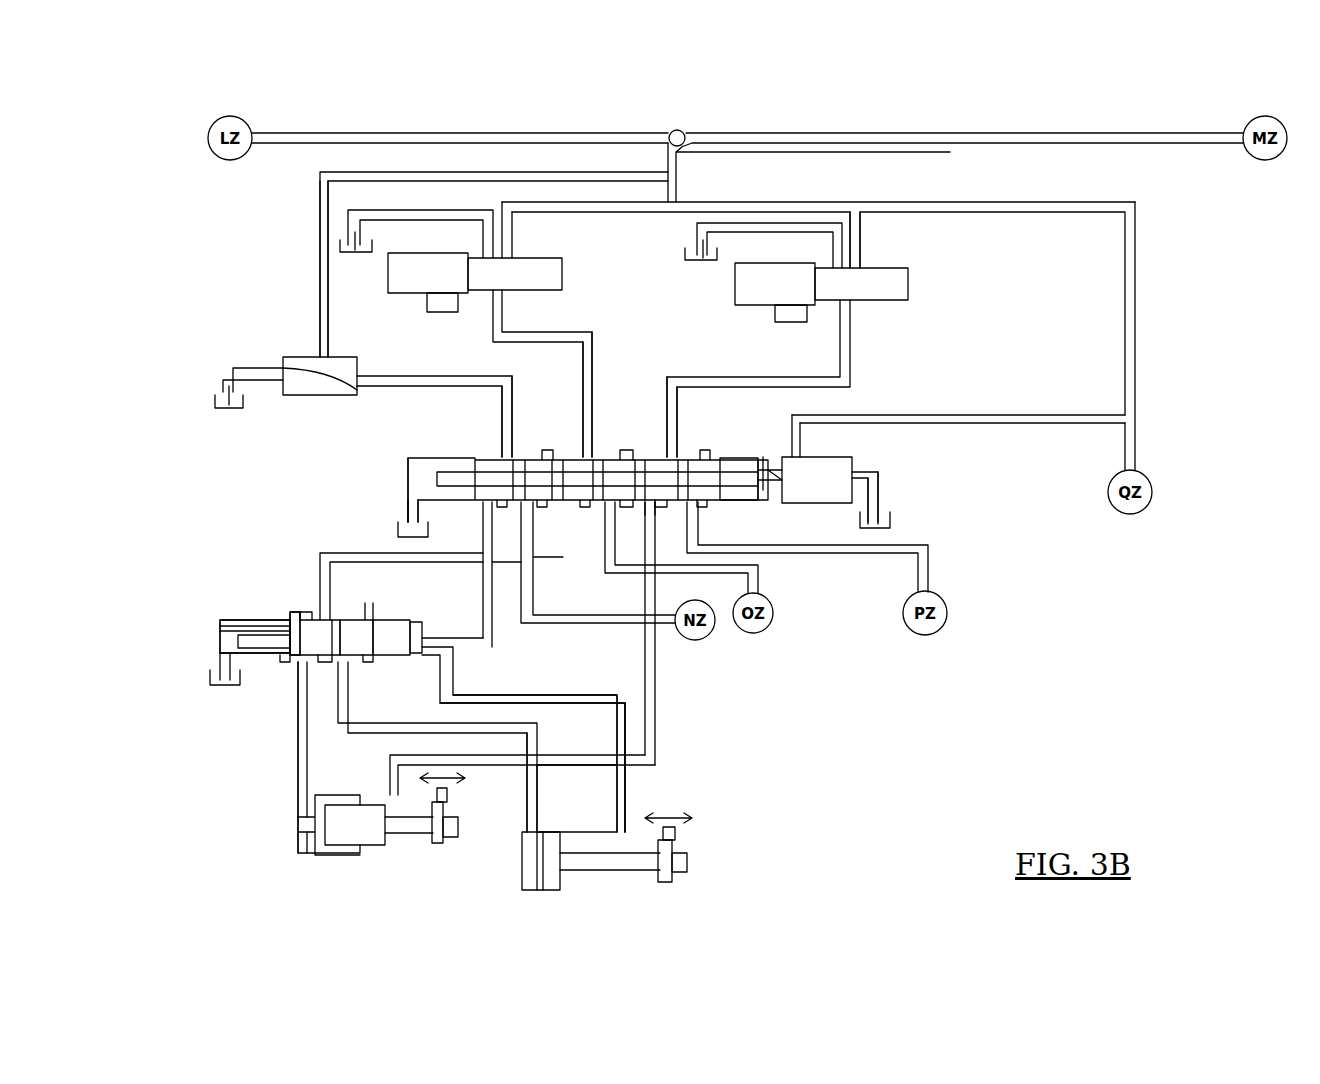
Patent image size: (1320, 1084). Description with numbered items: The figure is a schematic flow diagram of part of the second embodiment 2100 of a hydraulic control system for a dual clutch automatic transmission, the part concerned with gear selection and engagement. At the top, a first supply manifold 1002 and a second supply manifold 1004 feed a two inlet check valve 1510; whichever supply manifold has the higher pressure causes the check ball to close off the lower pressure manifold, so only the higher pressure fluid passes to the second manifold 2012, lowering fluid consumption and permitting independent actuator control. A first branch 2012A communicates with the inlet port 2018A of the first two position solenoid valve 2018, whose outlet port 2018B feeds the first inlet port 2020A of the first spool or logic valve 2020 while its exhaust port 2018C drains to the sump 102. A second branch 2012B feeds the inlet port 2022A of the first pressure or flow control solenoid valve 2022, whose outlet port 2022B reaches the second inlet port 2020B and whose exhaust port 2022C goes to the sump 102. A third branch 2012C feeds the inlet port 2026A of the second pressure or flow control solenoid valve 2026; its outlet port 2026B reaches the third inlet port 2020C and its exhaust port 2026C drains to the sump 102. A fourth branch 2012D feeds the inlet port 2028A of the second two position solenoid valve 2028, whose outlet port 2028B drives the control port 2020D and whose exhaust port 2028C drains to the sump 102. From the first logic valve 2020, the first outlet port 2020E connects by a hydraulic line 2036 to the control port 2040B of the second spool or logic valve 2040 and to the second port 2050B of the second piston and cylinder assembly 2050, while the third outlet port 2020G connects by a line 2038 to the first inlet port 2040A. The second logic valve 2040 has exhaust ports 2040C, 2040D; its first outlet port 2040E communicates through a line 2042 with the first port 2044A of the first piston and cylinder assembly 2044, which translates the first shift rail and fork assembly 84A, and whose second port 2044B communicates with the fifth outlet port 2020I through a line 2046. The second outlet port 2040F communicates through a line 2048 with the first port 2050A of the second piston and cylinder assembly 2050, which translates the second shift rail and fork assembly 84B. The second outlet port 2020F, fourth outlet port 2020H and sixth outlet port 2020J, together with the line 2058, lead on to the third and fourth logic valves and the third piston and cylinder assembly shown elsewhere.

The first supply manifold 1002 is at (585, 136).
The second supply manifold 1004 is at (968, 136).
The two inlet check valve 1510 is at (690, 132).
The second manifold 2012 is at (680, 178).
The first branch 2012A is at (320, 205).
The second branch 2012B is at (520, 210).
The third branch 2012C is at (862, 222).
The fourth branch 2012D is at (975, 415).
The first two position solenoid valve 2018 is at (292, 408).
The inlet port 2018A is at (318, 322).
The outlet port 2018B is at (410, 350).
The exhaust port 2018C is at (357, 392).
The first spool or logic valve 2020 is at (372, 492).
The first inlet port 2020A is at (482, 450).
The second inlet port 2020B is at (600, 445).
The third inlet port 2020C is at (672, 448).
The control port 2020D is at (770, 490).
The first outlet port 2020E is at (410, 512).
The second outlet port 2020F is at (483, 555).
The third outlet port 2020G is at (570, 560).
The fourth outlet port 2020H is at (605, 560).
The fifth outlet port 2020I is at (650, 520).
The sixth outlet port 2020J is at (695, 505).
The first pressure or flow control solenoid valve 2022 is at (598, 250).
The inlet port 2022A is at (510, 252).
The outlet port 2022B is at (498, 305).
The exhaust port 2022C is at (480, 258).
The second pressure or flow control solenoid valve 2026 is at (718, 295).
The inlet port 2026A is at (862, 262).
The outlet port 2026B is at (850, 322).
The exhaust port 2026C is at (835, 262).
The second two position solenoid valve 2028 is at (855, 465).
The inlet port 2028A is at (800, 450).
The outlet port 2028B is at (775, 480).
The exhaust port 2028C is at (945, 493).
The hydraulic line 2036 is at (660, 795).
The line 2038 is at (320, 556).
The second spool or logic valve 2040 is at (208, 650).
The first inlet port 2040A is at (325, 615).
The control port 2040B is at (455, 645).
The exhaust port 2040C is at (285, 610).
The exhaust port 2040D is at (370, 612).
The first outlet port 2040E is at (302, 658).
The second outlet port 2040F is at (345, 655).
The line 2042 is at (298, 782).
The first piston and cylinder assembly 2044 is at (268, 845).
The first port 2044A is at (312, 808).
The second port 2044B is at (390, 790).
The line 2046 is at (657, 720).
The line 2048 is at (580, 803).
The second piston and cylinder assembly 2050 is at (505, 880).
The first port 2050A is at (528, 835).
The second port 2050B is at (630, 810).
The line 2058 is at (935, 570).
The first shift rail and fork assembly 84A is at (415, 835).
The second shift rail and fork assembly 84B is at (632, 860).
The sump 102 is at (352, 245).
The second embodiment 2100 is at (1115, 660).